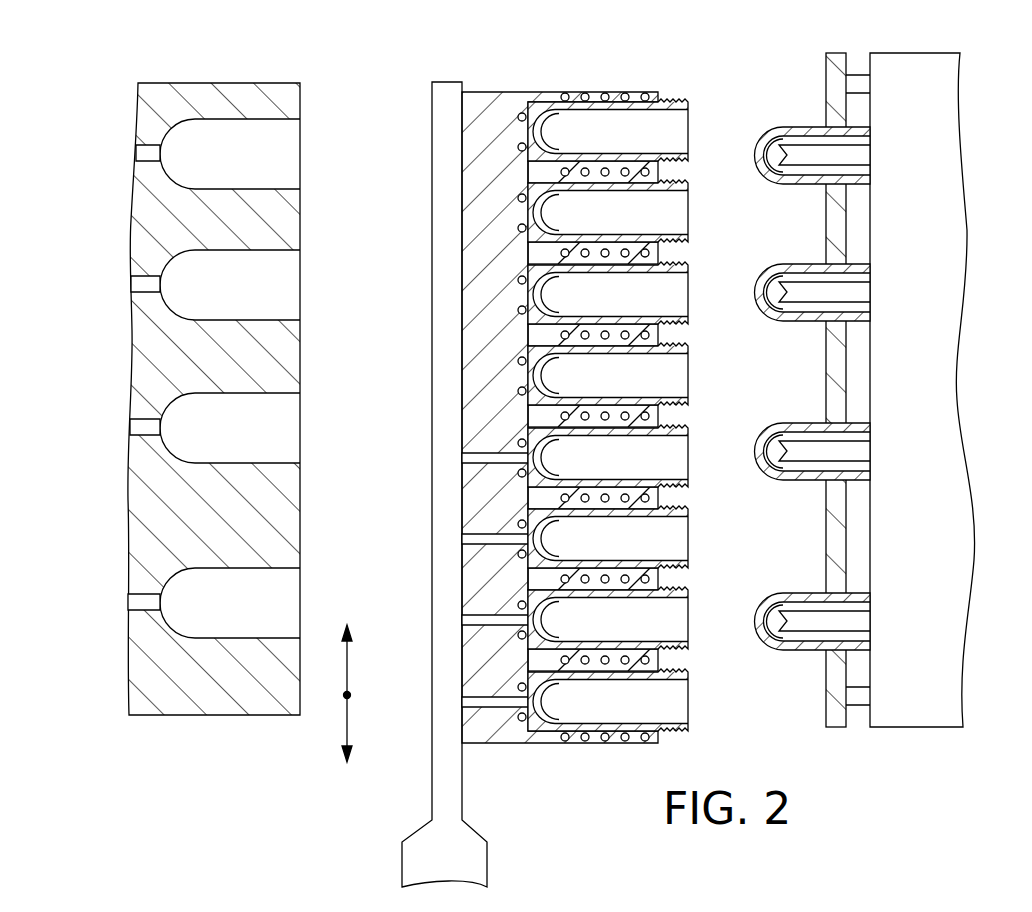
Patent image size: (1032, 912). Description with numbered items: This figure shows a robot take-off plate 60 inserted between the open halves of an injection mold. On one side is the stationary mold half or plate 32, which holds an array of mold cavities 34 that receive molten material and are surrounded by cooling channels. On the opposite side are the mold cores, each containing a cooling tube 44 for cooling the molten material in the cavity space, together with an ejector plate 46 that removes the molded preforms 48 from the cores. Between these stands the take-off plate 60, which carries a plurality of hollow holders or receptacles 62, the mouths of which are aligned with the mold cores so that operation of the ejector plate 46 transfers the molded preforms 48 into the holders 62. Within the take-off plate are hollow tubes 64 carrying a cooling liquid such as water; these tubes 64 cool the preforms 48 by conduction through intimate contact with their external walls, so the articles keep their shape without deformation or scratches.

The stationary mold half or plate 32 is at (178, 705).
The mold cavities 34 is at (945, 98).
The cooling tube 44 is at (792, 620).
The ejector plate 46 is at (827, 68).
The molded preforms 48 is at (760, 652).
The robot take-off plate 60 is at (498, 115).
The hollow holders or receptacles 62 is at (677, 102).
The hollow tubes 64 is at (615, 92).